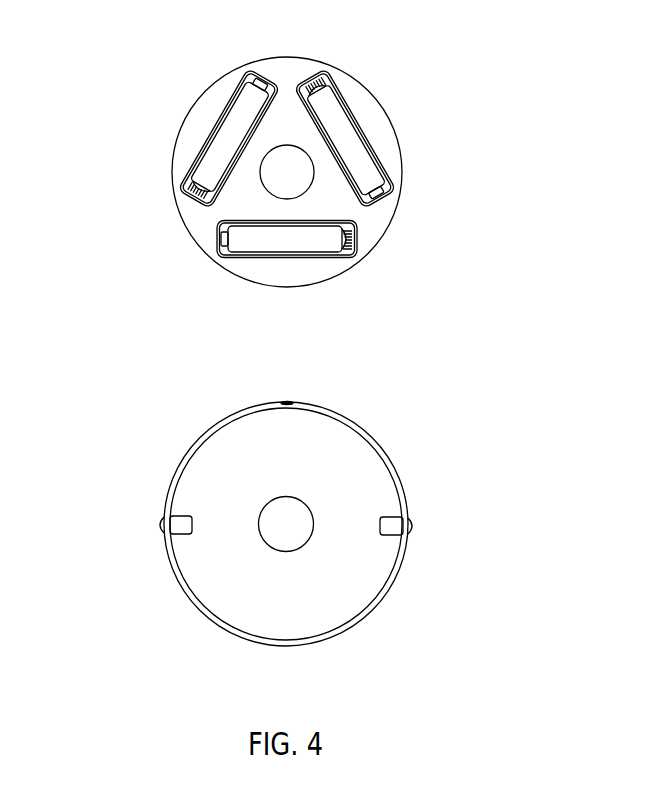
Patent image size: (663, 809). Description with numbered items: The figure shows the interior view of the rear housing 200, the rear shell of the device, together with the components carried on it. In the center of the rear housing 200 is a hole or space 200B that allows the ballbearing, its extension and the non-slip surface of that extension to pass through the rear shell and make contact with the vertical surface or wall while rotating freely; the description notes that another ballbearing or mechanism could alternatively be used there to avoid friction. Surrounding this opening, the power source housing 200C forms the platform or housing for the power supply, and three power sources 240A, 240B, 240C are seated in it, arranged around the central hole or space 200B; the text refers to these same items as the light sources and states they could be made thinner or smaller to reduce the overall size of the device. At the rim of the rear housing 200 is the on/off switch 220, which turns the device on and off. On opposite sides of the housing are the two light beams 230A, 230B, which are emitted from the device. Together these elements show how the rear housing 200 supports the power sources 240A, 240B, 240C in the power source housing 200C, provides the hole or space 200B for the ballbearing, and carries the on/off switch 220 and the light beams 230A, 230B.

The rear housing 200 is at (202, 437).
The hole or space 200B is at (282, 172).
The power source housing 200C is at (215, 98).
The on/off switch 220 is at (287, 398).
The light beam 230A is at (152, 524).
The light beam 230B is at (423, 526).
The power source 240A is at (213, 127).
The power source 240B is at (360, 130).
The power source 240C is at (287, 259).